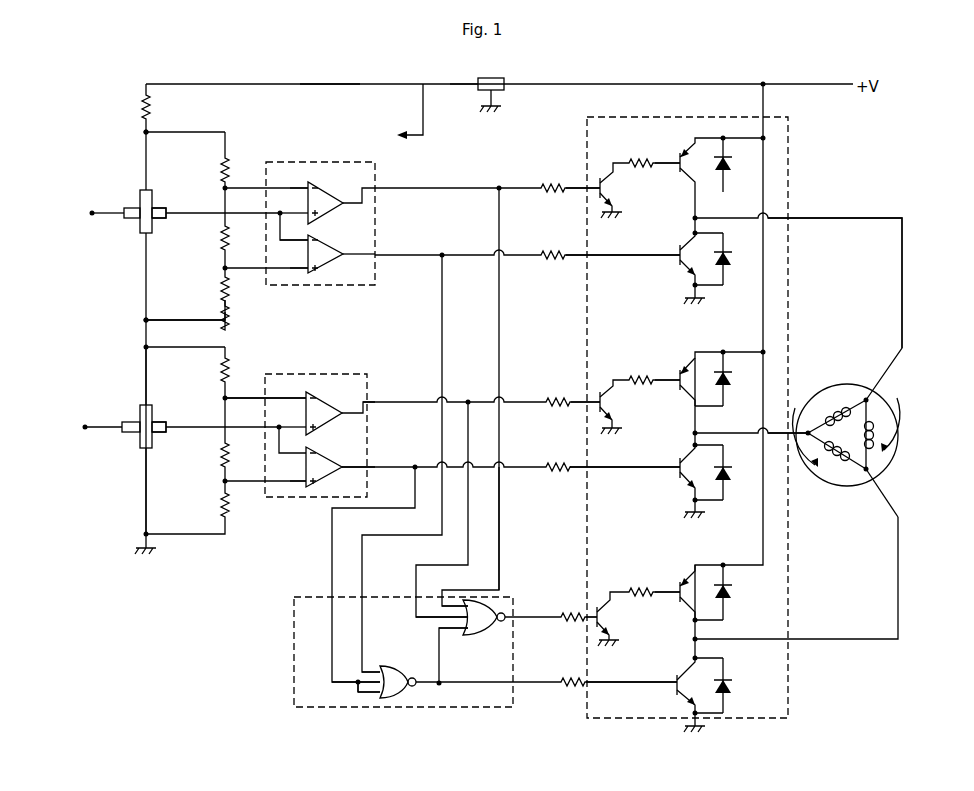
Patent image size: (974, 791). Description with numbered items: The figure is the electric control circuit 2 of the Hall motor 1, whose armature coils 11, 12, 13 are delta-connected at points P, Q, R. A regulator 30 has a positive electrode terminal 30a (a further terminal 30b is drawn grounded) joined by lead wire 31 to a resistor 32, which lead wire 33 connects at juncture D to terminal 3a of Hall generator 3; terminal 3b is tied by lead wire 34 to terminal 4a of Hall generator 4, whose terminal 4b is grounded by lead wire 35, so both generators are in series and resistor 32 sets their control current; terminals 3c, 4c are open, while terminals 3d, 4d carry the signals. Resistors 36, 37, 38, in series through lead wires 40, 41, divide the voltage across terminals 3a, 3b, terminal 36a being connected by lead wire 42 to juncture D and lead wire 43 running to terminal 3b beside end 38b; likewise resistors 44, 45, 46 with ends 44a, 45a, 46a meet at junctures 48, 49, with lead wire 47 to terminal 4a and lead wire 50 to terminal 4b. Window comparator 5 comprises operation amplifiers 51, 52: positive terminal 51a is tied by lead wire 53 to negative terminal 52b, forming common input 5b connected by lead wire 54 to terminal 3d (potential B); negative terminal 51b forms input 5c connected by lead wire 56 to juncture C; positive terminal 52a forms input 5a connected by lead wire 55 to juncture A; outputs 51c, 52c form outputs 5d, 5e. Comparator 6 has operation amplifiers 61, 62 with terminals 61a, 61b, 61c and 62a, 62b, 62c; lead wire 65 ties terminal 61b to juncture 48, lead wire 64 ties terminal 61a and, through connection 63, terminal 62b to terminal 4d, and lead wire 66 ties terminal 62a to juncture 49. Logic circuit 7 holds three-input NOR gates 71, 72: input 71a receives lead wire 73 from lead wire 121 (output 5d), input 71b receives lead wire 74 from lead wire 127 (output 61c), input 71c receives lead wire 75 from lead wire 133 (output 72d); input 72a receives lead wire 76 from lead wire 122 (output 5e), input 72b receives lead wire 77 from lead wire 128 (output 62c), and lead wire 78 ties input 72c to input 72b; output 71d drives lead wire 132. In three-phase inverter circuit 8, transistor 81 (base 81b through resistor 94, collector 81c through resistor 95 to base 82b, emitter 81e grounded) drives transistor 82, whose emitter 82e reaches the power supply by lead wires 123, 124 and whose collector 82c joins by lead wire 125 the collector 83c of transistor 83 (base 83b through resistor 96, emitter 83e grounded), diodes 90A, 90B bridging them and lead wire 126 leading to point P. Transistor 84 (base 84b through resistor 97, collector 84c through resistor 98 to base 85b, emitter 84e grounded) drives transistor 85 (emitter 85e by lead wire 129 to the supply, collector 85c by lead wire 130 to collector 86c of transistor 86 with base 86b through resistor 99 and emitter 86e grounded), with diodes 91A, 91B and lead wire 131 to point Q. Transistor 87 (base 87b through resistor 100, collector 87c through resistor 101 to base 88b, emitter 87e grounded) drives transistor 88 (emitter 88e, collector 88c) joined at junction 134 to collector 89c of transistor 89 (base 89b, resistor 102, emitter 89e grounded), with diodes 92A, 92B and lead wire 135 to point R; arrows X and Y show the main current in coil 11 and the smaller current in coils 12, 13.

The motor drive apparatus 1 is at (642, 80).
The power supply line 2 is at (331, 83).
The first position detector 3 is at (138, 197).
The detector terminal 3a is at (147, 180).
The detector terminal 3b is at (148, 246).
The detector input terminal 3c is at (108, 215).
The detector output terminal 3d is at (177, 220).
The second position detector 4 is at (138, 404).
The detector terminal 4a is at (147, 389).
The detector terminal 4b is at (148, 463).
The detector input terminal 4c is at (104, 429).
The detector output terminal 4d is at (168, 443).
The first comparator circuit 5 is at (326, 160).
The comparator input line 5a is at (252, 268).
The comparator input line 5b is at (272, 188).
The comparator input line 5c is at (273, 188).
The comparator output line 5d is at (393, 188).
The comparator output line 5e is at (394, 255).
The second comparator circuit 6 is at (329, 372).
The logic circuit 7 is at (292, 609).
The drive circuit 8 is at (688, 115).
The motor 11 is at (880, 433).
The motor winding 12 is at (838, 461).
The motor winding 13 is at (842, 407).
The fuse 30 is at (486, 78).
The fuse terminal 30a is at (478, 84).
The ground connection 30b is at (500, 96).
The power supply bus 31 is at (212, 84).
The resistor 32 is at (142, 104).
The junction 33 is at (144, 132).
The junction 34 is at (144, 322).
The ground junction 35 is at (144, 537).
The resistor 36 is at (229, 160).
The resistor lead 36a is at (228, 150).
The resistor 37 is at (235, 240).
The resistor 38 is at (258, 297).
The resistor lead 38b is at (228, 320).
The connection line 40 is at (222, 213).
The resistor 41 is at (222, 277).
The connection line 42 is at (187, 134).
The connection line 43 is at (178, 320).
The resistor 44 is at (229, 373).
The resistor lead 44a is at (228, 351).
The resistor 45 is at (238, 454).
The resistor lead 45a is at (245, 412).
The resistor 46 is at (230, 513).
The resistor lead 46a is at (228, 490).
The connection line 47 is at (178, 347).
The junction 48 is at (222, 398).
The junction 49 is at (222, 481).
The connection line 50 is at (178, 534).
The comparator 51 is at (341, 195).
The comparator non-inverting input 51a is at (295, 201).
The comparator inverting input 51b is at (301, 188).
The comparator output 51c is at (355, 203).
The comparator 52 is at (341, 252).
The comparator input line 52a is at (308, 272).
The comparator non-inverting input 52b is at (291, 259).
The comparator output 52c is at (356, 256).
The connection line 53 is at (294, 229).
The connection line 54 is at (278, 240).
The connection line 55 is at (282, 270).
The connection line 56 is at (266, 201).
The comparator 61 is at (342, 404).
The comparator non-inverting input 61a is at (291, 415).
The comparator inverting input 61b is at (268, 387).
The comparator output 61c is at (356, 413).
The comparator 62 is at (342, 461).
The comparator input line 62a is at (305, 488).
The comparator non-inverting input 62b is at (290, 468).
The comparator output 62c is at (356, 468).
The connection line 63 is at (292, 439).
The connection line 64 is at (250, 470).
The connection line 65 is at (265, 387).
The connection line 66 is at (265, 473).
The NOR gate 71 is at (484, 636).
The NOR gate input 71a is at (459, 604).
The NOR gate input 71b is at (442, 606).
The NOR gate input 71c is at (454, 631).
The NOR gate output 71d is at (515, 617).
The NOR gate 72 is at (389, 663).
The NOR gate input 72a is at (372, 668).
The NOR gate input 72b is at (356, 673).
The NOR gate input 72c is at (380, 697).
The NOR gate output 72d is at (432, 684).
The signal line 73 is at (500, 528).
The signal line 74 is at (416, 569).
The feedback line 75 is at (441, 676).
The signal line 76 is at (443, 340).
The signal line 77 is at (332, 556).
The connection line 78 is at (359, 694).
The transistor 81 is at (601, 176).
The transistor base 81b is at (597, 192).
The transistor collector 81c is at (611, 178).
The transistor emitter 81e is at (614, 209).
The transistor 82 is at (677, 155).
The transistor base 82b is at (666, 179).
The transistor collector 82c is at (694, 193).
The transistor emitter 82e is at (696, 144).
The transistor 83 is at (677, 246).
The transistor base 83b is at (676, 258).
The transistor collector 83c is at (702, 243).
The transistor emitter 83e is at (692, 287).
The transistor 84 is at (600, 390).
The transistor base 84b is at (597, 404).
The transistor collector 84c is at (611, 388).
The transistor emitter 84e is at (614, 424).
The transistor 85 is at (677, 373).
The transistor base 85b is at (665, 394).
The transistor collector 85c is at (694, 407).
The transistor emitter 85e is at (695, 358).
The transistor 86 is at (674, 464).
The transistor base 86b is at (672, 470).
The transistor collector 86c is at (694, 446).
The transistor emitter 86e is at (692, 501).
The transistor 87 is at (600, 605).
The transistor base 87b is at (597, 619).
The transistor collector 87c is at (610, 599).
The transistor emitter 87e is at (612, 639).
The transistor 88 is at (675, 584).
The transistor base 88b is at (663, 606).
The transistor collector 88c is at (693, 621).
The transistor emitter 88e is at (695, 572).
The transistor 89 is at (673, 677).
The transistor base 89b is at (660, 686).
The transistor collector 89c is at (700, 677).
The transistor emitter 89e is at (693, 709).
The diode 90A is at (729, 162).
The diode 90B is at (730, 251).
The diode 91A is at (730, 375).
The diode 91B is at (735, 462).
The diode 92A is at (728, 587).
The diode 92B is at (729, 676).
The resistor 94 is at (553, 188).
The resistor 95 is at (641, 163).
The resistor 96 is at (553, 255).
The resistor 97 is at (557, 401).
The resistor 98 is at (641, 380).
The resistor 99 is at (557, 466).
The resistor 100 is at (572, 616).
The resistor 101 is at (640, 592).
The resistor 102 is at (572, 681).
The signal line 121 is at (492, 186).
The signal line 122 is at (497, 255).
The connection line 123 is at (746, 138).
The power supply line 124 is at (800, 74).
The output line 125 is at (697, 217).
The output line 126 is at (837, 219).
The signal line 127 is at (518, 398).
The signal line 128 is at (518, 464).
The connection line 129 is at (746, 352).
The output junction 130 is at (697, 431).
The output line 131 is at (745, 433).
The signal line 132 is at (545, 618).
The signal line 133 is at (545, 683).
The output junction 134 is at (692, 640).
The output line 135 is at (740, 639).
The node A is at (228, 268).
The node B is at (222, 220).
The node C is at (228, 187).
The node D is at (145, 134).
The motor terminal P is at (866, 397).
The motor terminal Q is at (806, 455).
The motor terminal R is at (880, 467).
The rotation direction X is at (892, 389).
The motor terminal Y is at (816, 401).